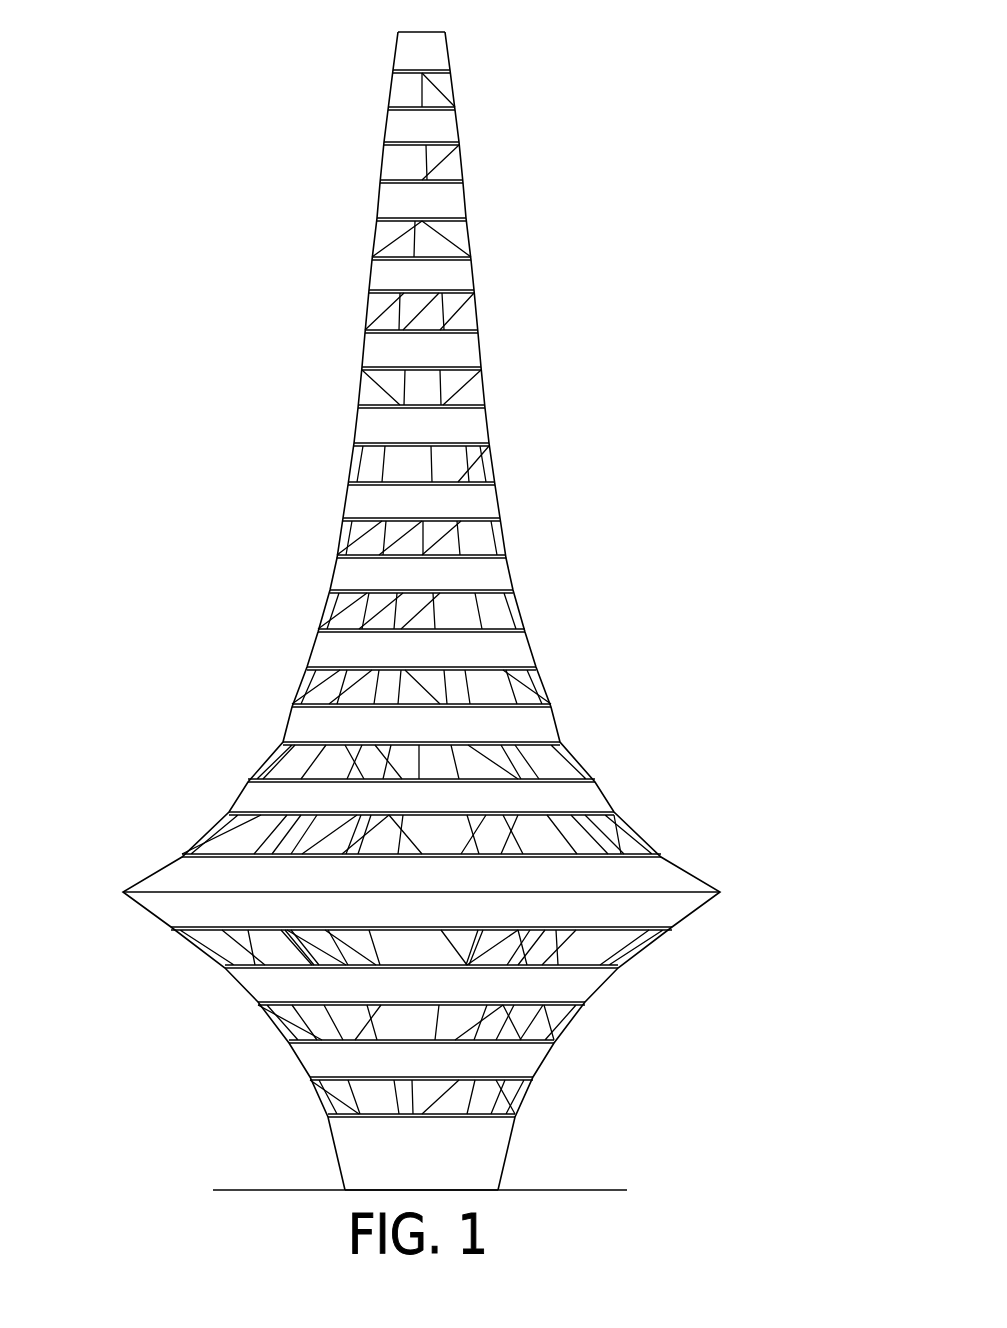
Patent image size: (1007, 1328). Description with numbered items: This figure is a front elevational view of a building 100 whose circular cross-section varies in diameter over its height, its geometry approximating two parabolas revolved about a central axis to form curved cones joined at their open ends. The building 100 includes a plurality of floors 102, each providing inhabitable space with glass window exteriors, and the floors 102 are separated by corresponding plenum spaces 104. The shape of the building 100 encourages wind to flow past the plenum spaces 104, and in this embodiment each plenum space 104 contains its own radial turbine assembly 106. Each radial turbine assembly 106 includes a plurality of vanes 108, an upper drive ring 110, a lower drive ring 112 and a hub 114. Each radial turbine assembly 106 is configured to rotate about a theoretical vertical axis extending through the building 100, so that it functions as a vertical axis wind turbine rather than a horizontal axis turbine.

The building 100 is at (655, 405).
The floor 102 is at (397, 50).
The plenum space 104 is at (394, 88).
The radial turbine assembly 106 is at (438, 85).
The vane 108 is at (461, 162).
The upper drive ring 110 is at (460, 143).
The lower drive ring 112 is at (463, 182).
The hub 114 is at (431, 152).